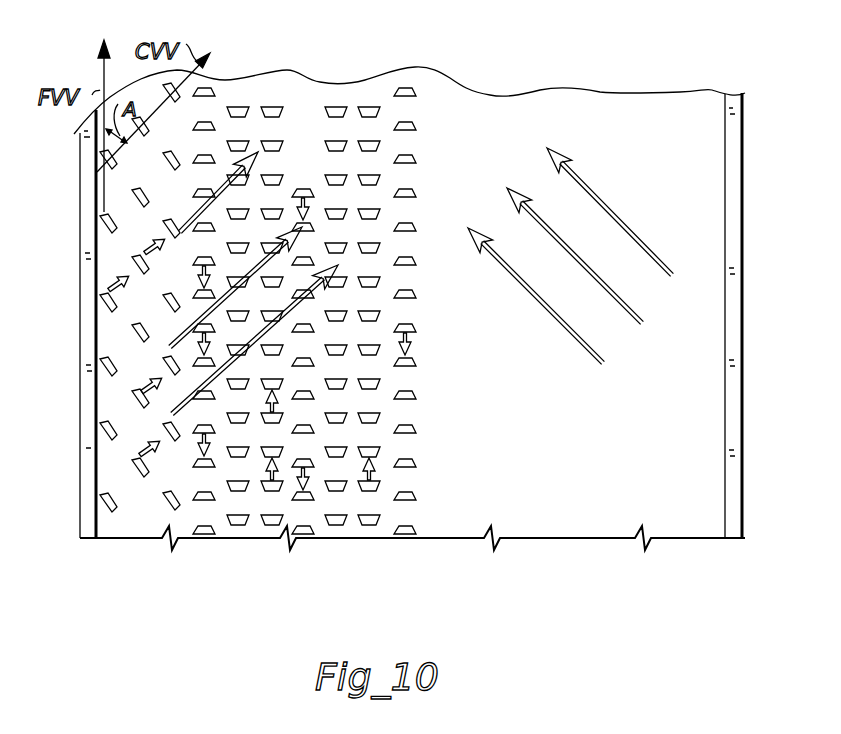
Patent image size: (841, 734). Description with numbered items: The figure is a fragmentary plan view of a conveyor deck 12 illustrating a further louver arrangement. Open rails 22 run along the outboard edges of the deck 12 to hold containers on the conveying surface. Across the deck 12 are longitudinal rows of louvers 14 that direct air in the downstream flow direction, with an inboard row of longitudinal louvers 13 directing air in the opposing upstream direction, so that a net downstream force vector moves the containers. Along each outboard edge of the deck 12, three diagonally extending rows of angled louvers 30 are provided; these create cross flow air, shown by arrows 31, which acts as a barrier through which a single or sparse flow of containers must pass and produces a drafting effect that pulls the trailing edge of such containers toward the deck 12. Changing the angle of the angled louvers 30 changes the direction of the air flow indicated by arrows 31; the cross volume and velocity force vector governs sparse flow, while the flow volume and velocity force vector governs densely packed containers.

The deck 12 is at (652, 99).
The longitudinal louvers (upstream direction) 13 is at (415, 126).
The louvers (downstream direction) 14 is at (271, 107).
The open rails 22 is at (80, 246).
The angled louvers 30 is at (166, 301).
The arrows 31 is at (256, 152).